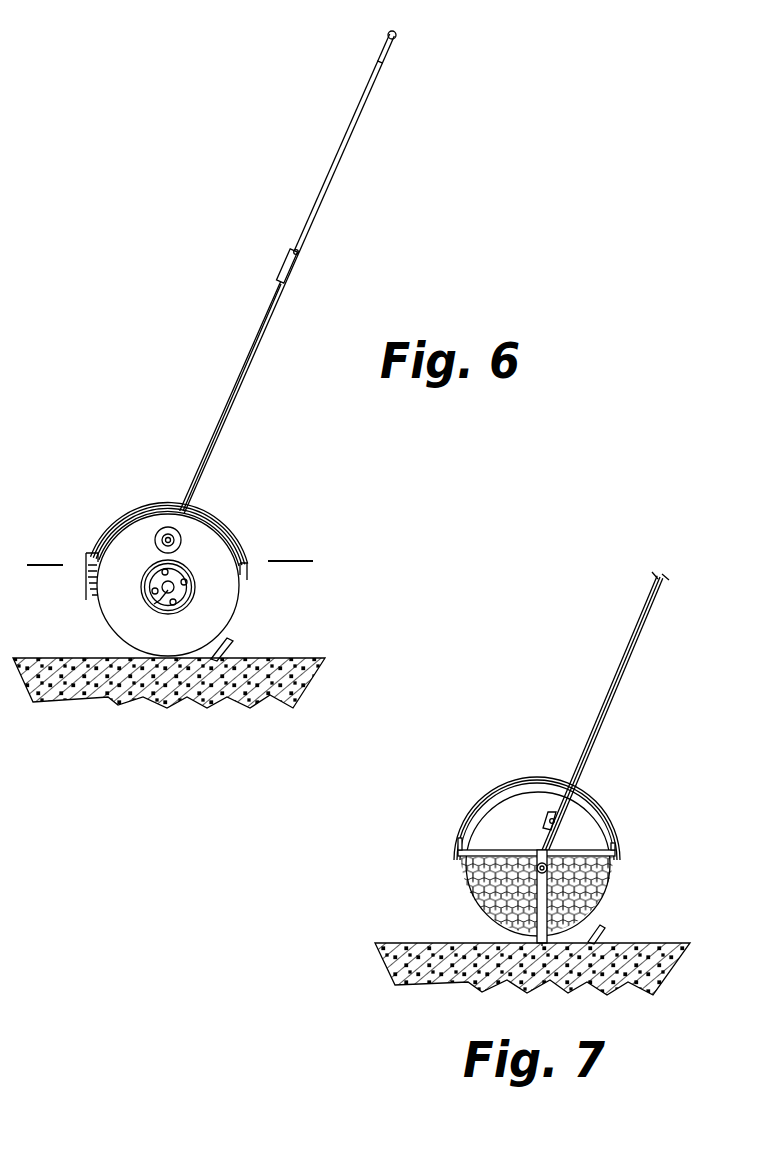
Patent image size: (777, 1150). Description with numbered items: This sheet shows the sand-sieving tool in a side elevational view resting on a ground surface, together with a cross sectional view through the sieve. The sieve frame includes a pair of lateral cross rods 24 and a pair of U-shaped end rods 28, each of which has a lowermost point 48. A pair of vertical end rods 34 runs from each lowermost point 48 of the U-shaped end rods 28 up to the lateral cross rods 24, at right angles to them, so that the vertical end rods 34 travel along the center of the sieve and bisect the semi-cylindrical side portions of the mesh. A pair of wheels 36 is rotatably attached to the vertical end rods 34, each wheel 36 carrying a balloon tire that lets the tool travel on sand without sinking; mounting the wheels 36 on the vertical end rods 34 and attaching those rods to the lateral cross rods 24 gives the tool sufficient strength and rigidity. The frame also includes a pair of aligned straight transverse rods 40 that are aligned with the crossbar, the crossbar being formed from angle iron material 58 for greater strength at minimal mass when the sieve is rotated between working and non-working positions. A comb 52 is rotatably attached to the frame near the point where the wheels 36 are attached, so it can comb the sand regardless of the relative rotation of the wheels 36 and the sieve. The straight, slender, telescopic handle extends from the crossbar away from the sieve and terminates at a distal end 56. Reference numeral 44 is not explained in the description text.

In FIG. 7, the lateral cross rods 24 is at (593, 830).
In FIG. 6, the U-shaped end rods 28 is at (86, 572).
In FIG. 7, the U-shaped end rods 28 is at (615, 880).
In FIG. 7, the vertical end rods 34 is at (555, 817).
In FIG. 6, the wheels 36 is at (182, 568).
In FIG. 7, the straight transverse rods 40 is at (460, 852).
In FIG. 6, the width 44 is at (47, 558).
In FIG. 7, the lowermost point 48 is at (542, 945).
In FIG. 6, the comb 52 is at (230, 643).
In FIG. 7, the comb 52 is at (597, 932).
In FIG. 7, the distal end 56 is at (533, 827).
In FIG. 7, the angle iron material 58 is at (527, 838).